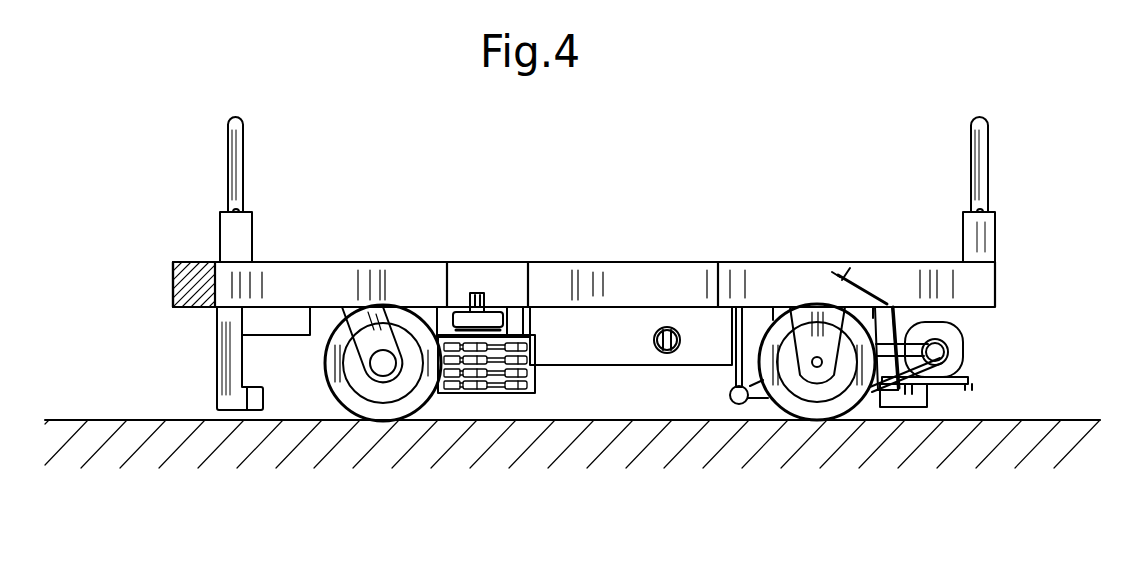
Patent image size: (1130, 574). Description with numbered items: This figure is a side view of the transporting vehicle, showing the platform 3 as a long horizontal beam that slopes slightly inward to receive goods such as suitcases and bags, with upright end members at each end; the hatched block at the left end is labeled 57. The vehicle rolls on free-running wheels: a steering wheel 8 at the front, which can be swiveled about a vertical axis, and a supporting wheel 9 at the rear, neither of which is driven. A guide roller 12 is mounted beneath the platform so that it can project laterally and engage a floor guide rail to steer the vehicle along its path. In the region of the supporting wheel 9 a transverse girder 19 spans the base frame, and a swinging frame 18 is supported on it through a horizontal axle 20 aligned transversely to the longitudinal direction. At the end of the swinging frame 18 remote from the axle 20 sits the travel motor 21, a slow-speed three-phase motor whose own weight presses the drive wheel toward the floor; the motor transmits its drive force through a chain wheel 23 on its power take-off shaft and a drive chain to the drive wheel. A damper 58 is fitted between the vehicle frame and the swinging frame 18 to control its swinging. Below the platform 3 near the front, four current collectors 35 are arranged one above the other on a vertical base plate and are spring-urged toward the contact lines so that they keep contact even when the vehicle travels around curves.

The platform 3 is at (332, 262).
The steering wheel 8 is at (365, 380).
The supporting wheel 9 is at (817, 390).
The guide roller 12 is at (492, 322).
The swinging frame 18 is at (920, 380).
The transverse girder 19 is at (750, 343).
The axle 20 is at (740, 404).
The travel motor 21 is at (938, 333).
The chain wheel 23 is at (948, 353).
The current collector 35 is at (473, 387).
The end block 57 is at (172, 282).
The damper 58 is at (870, 300).